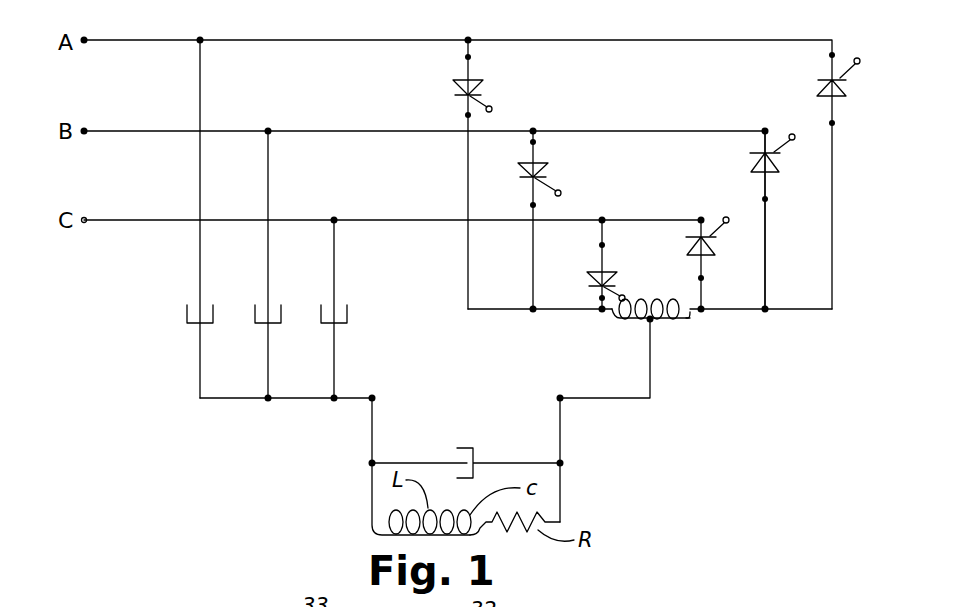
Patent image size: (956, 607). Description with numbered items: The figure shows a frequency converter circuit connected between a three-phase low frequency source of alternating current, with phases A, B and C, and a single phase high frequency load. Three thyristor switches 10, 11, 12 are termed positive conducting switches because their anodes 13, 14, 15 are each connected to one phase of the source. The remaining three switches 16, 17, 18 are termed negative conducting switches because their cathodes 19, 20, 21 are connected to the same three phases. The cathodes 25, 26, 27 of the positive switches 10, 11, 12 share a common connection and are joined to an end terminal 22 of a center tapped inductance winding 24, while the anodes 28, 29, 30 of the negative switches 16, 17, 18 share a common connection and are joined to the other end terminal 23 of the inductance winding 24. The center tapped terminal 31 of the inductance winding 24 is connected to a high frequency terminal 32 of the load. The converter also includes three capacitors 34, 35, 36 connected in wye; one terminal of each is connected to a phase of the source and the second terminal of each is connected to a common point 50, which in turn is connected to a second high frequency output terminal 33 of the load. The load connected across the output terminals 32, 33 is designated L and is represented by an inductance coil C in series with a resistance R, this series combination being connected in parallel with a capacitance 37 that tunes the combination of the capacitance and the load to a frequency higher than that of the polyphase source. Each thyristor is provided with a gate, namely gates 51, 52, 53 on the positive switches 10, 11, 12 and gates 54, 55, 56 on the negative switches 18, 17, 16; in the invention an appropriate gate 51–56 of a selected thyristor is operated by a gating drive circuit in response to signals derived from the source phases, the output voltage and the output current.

The positive conducting switch 10 is at (492, 82).
The positive conducting switch 11 is at (566, 166).
The positive conducting switch 12 is at (616, 274).
The anode 13 is at (462, 60).
The anode 14 is at (528, 148).
The anode 15 is at (598, 250).
The negative conducting switch 16 is at (849, 86).
The negative conducting switch 17 is at (785, 165).
The negative conducting switch 18 is at (722, 246).
The cathode 19 is at (830, 66).
The cathode 20 is at (760, 153).
The cathode 21 is at (698, 235).
The end terminal 22 is at (612, 312).
The end terminal 23 is at (703, 312).
The center tapped inductance winding 24 is at (666, 322).
The cathode 25 is at (462, 112).
The cathode 26 is at (530, 204).
The cathode 27 is at (598, 298).
The anode 28 is at (828, 123).
The anode 29 is at (762, 201).
The anode 30 is at (698, 278).
The center tapped terminal 31 is at (648, 322).
The high frequency terminal 32 is at (558, 396).
The second high frequency output terminal 33 is at (374, 397).
The capacitor 34 is at (216, 316).
The capacitor 35 is at (284, 316).
The capacitor 36 is at (350, 316).
The capacitance 37 is at (478, 452).
The common point 50 is at (268, 399).
The gate 51 is at (492, 108).
The gate 52 is at (562, 193).
The gate 53 is at (618, 312).
The gate 54 is at (730, 220).
The gate 55 is at (793, 140).
The gate 56 is at (857, 57).